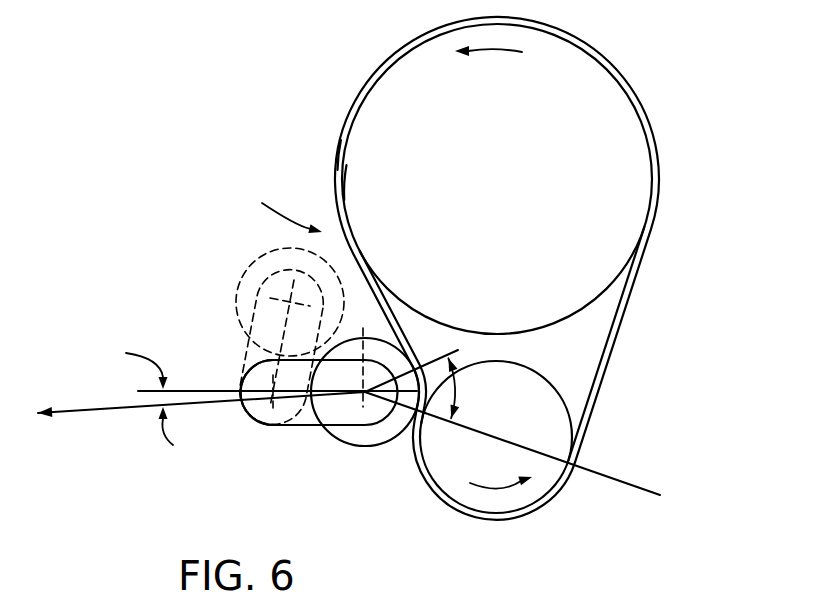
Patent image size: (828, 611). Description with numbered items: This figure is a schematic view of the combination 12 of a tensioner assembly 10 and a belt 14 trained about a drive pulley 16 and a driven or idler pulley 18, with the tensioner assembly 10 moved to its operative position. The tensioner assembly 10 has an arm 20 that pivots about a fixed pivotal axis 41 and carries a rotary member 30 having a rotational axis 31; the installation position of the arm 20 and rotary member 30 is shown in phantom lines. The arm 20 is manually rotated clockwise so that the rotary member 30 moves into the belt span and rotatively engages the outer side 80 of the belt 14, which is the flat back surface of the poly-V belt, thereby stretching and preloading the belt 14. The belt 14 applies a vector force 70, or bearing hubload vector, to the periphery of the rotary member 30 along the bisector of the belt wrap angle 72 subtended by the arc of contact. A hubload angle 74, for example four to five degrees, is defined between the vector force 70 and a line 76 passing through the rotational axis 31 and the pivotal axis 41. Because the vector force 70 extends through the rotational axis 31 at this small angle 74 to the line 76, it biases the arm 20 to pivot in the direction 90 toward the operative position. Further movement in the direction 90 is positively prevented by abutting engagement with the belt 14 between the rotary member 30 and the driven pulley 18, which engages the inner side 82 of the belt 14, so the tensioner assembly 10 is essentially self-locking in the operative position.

The tensioner assembly 10 is at (297, 438).
The combination 12 is at (397, 462).
The belt 14 is at (623, 300).
The drive pulley 16 is at (600, 112).
The driven or idler pulley 18 is at (550, 435).
The arm 20 is at (249, 419).
The rotary member 30 is at (352, 448).
The rotational axis 31 is at (363, 390).
The fixed pivotal axis 41 is at (273, 387).
The vector force 70 is at (77, 412).
The belt wrap angle 72 is at (455, 390).
The hubload angle 74 is at (135, 392).
The line passing through the rotational axis and the pivotal axis 76 is at (187, 386).
The outer side of the belt 80 is at (337, 156).
The inner side of the belt 82 is at (344, 183).
The direction 90 is at (283, 291).